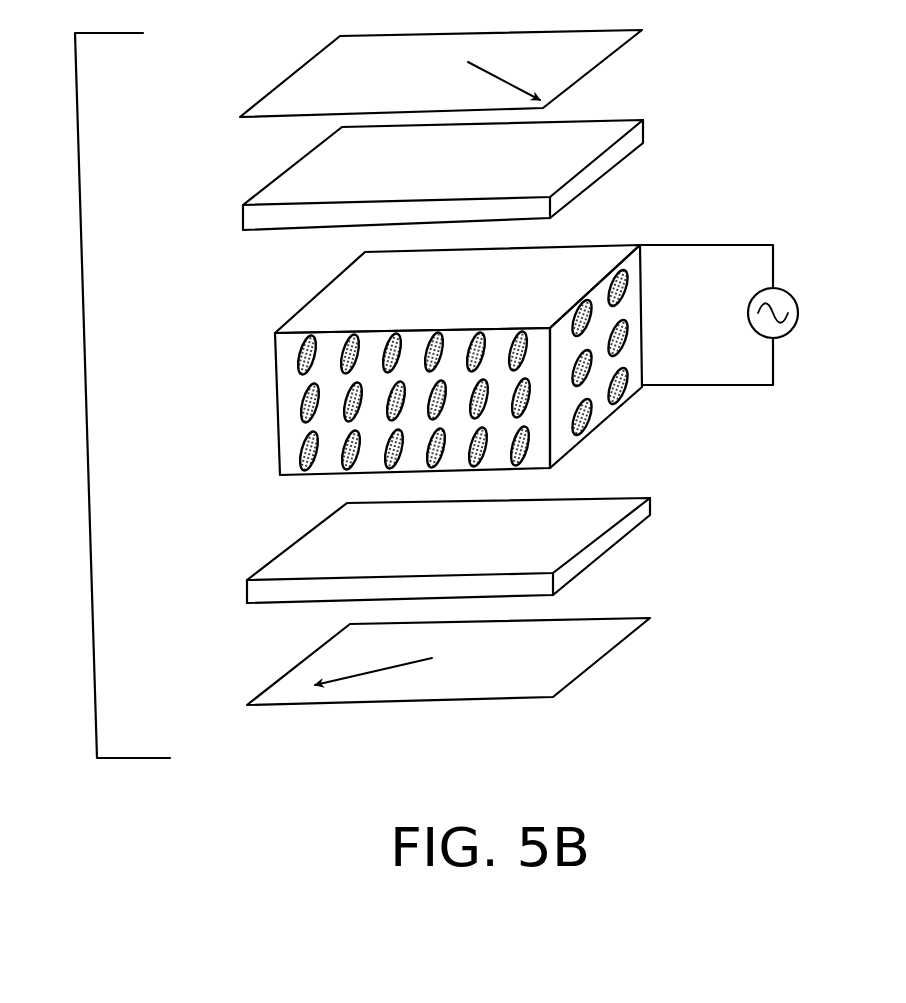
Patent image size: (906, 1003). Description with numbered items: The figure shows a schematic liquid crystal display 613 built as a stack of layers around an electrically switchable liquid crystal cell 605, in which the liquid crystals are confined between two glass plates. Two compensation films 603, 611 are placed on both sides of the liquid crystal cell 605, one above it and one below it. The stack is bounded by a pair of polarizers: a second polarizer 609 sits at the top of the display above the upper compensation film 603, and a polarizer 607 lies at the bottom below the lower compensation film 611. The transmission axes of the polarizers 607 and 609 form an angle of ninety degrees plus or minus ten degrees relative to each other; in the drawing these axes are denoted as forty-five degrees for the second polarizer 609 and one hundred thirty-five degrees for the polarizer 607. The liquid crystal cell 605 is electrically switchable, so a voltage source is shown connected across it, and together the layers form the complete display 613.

The compensation film 603 is at (607, 130).
The liquid crystal cell 605 is at (280, 390).
The polarizer 607 is at (617, 630).
The second polarizer 609 is at (617, 37).
The compensation film 611 is at (638, 515).
The liquid crystal display 613 is at (97, 395).